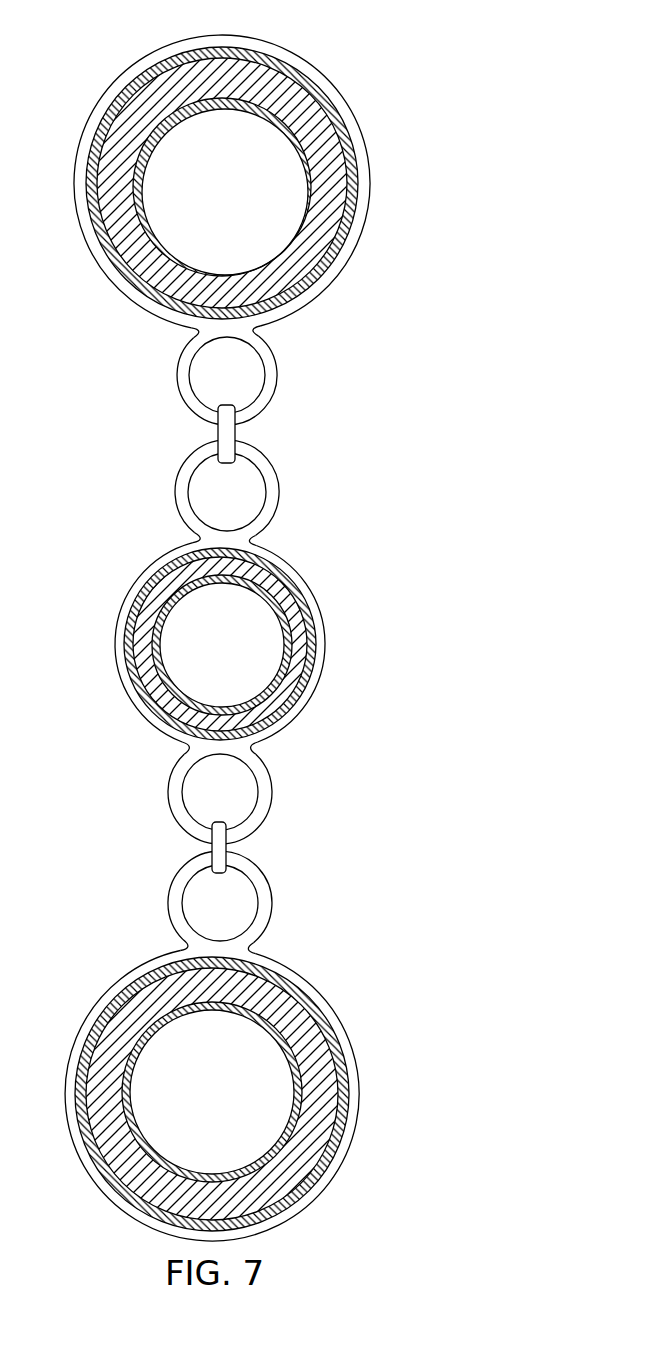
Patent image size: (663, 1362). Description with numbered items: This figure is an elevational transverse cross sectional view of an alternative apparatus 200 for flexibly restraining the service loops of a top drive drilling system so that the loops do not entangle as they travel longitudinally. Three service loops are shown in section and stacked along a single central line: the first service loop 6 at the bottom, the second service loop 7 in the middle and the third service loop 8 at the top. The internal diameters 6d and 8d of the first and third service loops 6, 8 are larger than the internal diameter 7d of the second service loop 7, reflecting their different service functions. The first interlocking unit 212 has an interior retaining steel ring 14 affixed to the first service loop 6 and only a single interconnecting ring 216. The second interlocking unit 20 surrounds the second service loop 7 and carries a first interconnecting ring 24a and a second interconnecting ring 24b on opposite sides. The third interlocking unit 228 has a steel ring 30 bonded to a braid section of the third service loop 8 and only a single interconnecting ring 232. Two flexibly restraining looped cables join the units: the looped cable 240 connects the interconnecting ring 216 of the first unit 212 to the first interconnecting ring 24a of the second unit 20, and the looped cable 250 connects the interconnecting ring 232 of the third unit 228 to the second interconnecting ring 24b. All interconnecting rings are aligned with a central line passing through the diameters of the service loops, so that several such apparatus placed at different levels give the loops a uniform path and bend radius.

The apparatus 200 is at (427, 107).
The steel ring 30 is at (292, 75).
The third service loop 8 is at (257, 121).
The internal diameter of the third service loop 8d is at (236, 215).
The third interlocking unit 228 is at (157, 333).
The interconnecting ring 232 is at (272, 377).
The looped cable 250 is at (215, 437).
The second interconnecting ring 24b is at (265, 482).
The second interlocking unit 20 is at (281, 537).
The second service loop 7 is at (260, 609).
The internal diameter of the second service loop 7d is at (235, 660).
The first interconnecting ring 24a is at (262, 780).
The looped cable 240 is at (208, 852).
The interconnecting ring 216 is at (260, 887).
The first interlocking unit 212 is at (281, 952).
The steel ring 14 is at (337, 1060).
The first service loop 6 is at (255, 1034).
The internal diameter of the first service loop 6d is at (228, 1113).